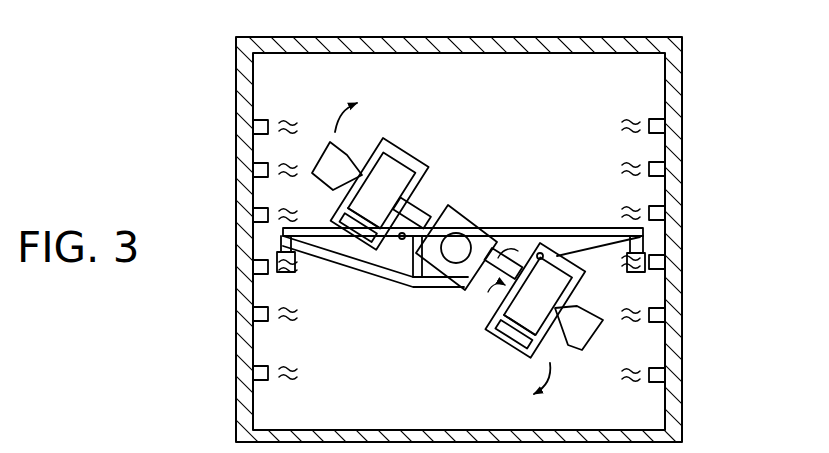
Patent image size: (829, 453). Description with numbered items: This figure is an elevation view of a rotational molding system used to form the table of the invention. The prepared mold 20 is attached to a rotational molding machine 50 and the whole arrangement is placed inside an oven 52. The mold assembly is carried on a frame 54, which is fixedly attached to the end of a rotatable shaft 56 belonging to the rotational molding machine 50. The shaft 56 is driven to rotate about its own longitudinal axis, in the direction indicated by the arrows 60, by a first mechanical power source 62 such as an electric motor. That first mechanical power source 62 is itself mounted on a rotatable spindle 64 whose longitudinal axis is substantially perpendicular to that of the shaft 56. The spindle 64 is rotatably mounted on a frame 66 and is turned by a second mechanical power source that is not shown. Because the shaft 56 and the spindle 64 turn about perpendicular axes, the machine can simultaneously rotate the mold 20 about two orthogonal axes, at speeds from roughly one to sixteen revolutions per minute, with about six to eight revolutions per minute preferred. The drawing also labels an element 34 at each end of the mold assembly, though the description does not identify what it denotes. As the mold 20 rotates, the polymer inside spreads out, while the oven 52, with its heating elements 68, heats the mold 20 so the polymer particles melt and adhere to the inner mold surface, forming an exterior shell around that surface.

The mold 20 is at (378, 166).
The paddle 34 is at (348, 152).
The rotational molding machine 50 is at (488, 182).
The oven 52 is at (214, 79).
The frame 54 is at (377, 250).
The rotatable shaft 56 is at (404, 240).
The arrows 60 is at (427, 204).
The first mechanical power source 62 is at (480, 242).
The rotatable spindle 64 is at (456, 263).
The frame 66 is at (338, 262).
The heating elements 68 is at (258, 312).